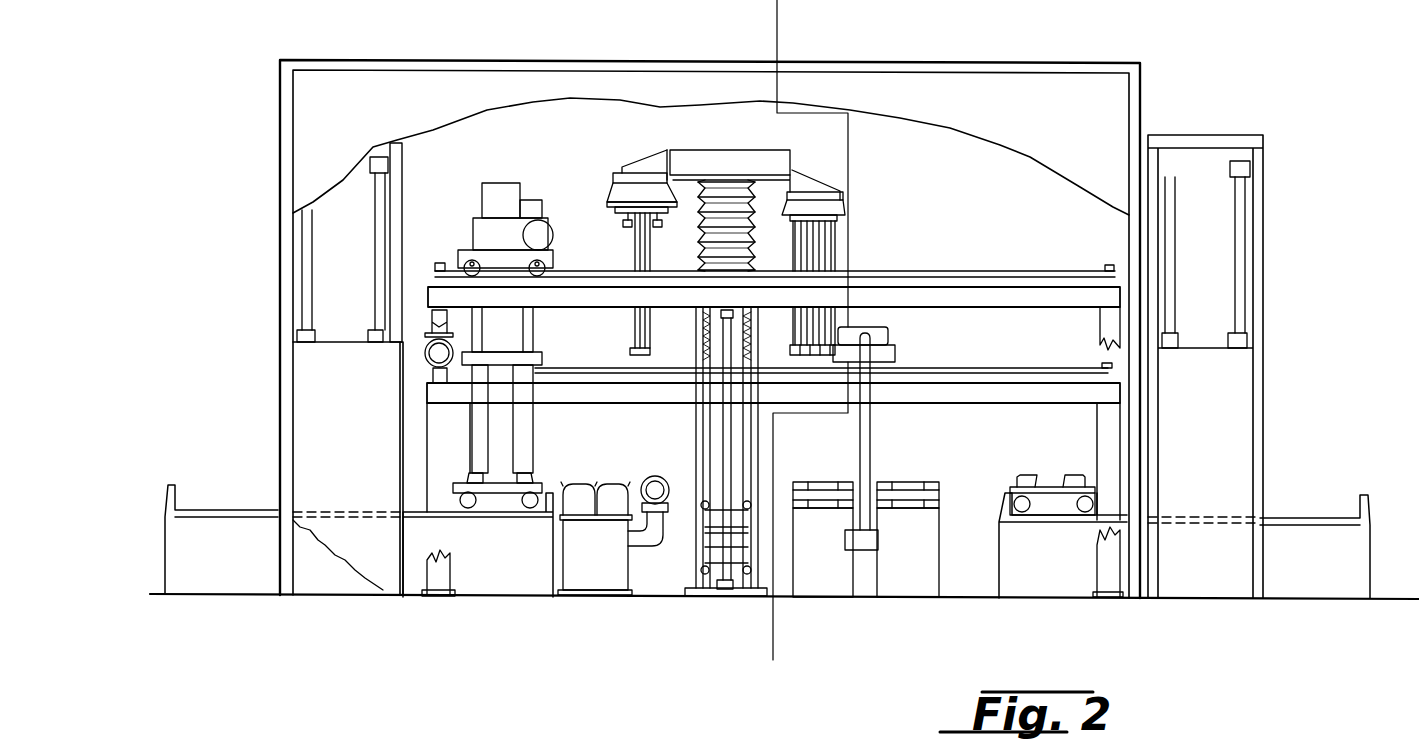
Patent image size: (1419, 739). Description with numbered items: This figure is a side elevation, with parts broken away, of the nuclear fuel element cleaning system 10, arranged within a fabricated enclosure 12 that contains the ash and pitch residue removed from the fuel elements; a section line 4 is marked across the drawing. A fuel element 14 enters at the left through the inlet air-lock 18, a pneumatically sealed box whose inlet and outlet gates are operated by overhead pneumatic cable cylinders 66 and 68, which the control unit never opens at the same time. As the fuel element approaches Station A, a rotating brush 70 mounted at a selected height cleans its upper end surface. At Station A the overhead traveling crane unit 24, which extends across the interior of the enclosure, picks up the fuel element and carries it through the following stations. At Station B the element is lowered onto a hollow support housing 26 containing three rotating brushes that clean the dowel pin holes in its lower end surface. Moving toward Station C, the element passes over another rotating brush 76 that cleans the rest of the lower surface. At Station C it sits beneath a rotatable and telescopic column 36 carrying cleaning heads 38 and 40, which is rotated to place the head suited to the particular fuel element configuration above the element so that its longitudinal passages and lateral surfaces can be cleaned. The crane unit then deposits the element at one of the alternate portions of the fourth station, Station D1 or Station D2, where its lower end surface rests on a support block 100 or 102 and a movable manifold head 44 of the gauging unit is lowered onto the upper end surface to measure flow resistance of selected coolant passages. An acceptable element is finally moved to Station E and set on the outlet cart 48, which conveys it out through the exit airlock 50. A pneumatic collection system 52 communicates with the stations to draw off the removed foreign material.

The section line 4- 4 is at (787, 39).
The nuclear fuel element cleaning system 10 is at (934, 53).
The fabricated enclosure 12 is at (1141, 90).
The nuclear fuel element 14 is at (528, 444).
The inlet air-lock 18 is at (363, 431).
The overhead traveling crane unit 24 is at (545, 335).
The hollow support housing 26 is at (580, 486).
The rotatable and telescopic column 36 is at (727, 158).
The cleaning head 38 is at (620, 245).
The cleaning head 40 is at (845, 250).
The movable manifold head 44 is at (890, 353).
The outlet cart 48 is at (1050, 487).
The exit airlock 50 is at (1224, 404).
The pneumatic collection system 52 is at (526, 189).
The overhead pneumatic cable cylinder 66 is at (290, 260).
The overhead pneumatic cable cylinder 68 is at (376, 230).
The rotating brush 70 is at (424, 353).
The rotating brush 76 is at (655, 477).
The support block 100 is at (822, 482).
The support block 102 is at (908, 482).
The Station A is at (507, 526).
The Station B is at (600, 530).
The Station C is at (740, 572).
The Station D1 is at (823, 518).
The Station D2 is at (913, 518).
The Station E is at (1050, 528).